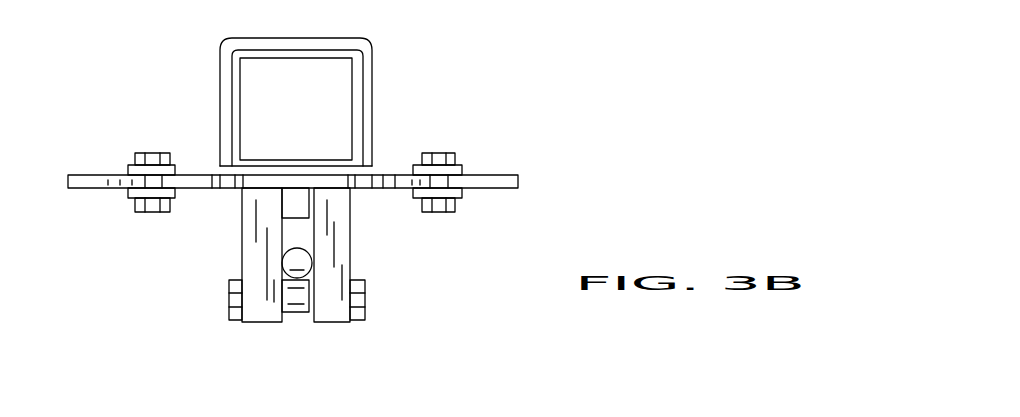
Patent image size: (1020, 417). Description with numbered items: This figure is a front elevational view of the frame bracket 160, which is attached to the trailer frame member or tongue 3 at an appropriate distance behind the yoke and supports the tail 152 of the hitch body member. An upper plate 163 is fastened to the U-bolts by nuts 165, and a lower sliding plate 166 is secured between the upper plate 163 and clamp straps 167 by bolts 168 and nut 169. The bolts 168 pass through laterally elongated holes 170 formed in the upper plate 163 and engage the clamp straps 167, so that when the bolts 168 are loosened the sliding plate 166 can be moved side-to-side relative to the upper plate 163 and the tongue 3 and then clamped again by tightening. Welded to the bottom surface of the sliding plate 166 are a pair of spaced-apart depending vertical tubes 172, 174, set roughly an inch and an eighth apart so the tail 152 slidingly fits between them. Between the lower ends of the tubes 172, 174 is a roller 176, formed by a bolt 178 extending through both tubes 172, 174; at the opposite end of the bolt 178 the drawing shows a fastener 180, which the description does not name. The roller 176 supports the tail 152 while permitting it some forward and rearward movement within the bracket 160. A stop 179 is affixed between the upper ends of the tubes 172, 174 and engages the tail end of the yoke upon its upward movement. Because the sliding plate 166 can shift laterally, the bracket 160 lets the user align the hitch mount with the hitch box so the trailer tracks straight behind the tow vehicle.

The trailer tongue 3 is at (326, 58).
The frame bracket 160 is at (180, 114).
The tail 152 is at (304, 264).
The upper plate 163 is at (410, 175).
The nuts 165 is at (392, 177).
The lower sliding plate 166 is at (500, 186).
The clamp straps 167 is at (148, 207).
The bolts 168 is at (167, 161).
The nut 169 is at (163, 200).
The laterally elongated holes 170 is at (143, 152).
The vertical tube 172 is at (254, 256).
The vertical tube 174 is at (338, 248).
The roller 176 is at (304, 320).
The bolt 178 is at (228, 300).
The stop 179 is at (297, 211).
The right nut 180 is at (364, 295).